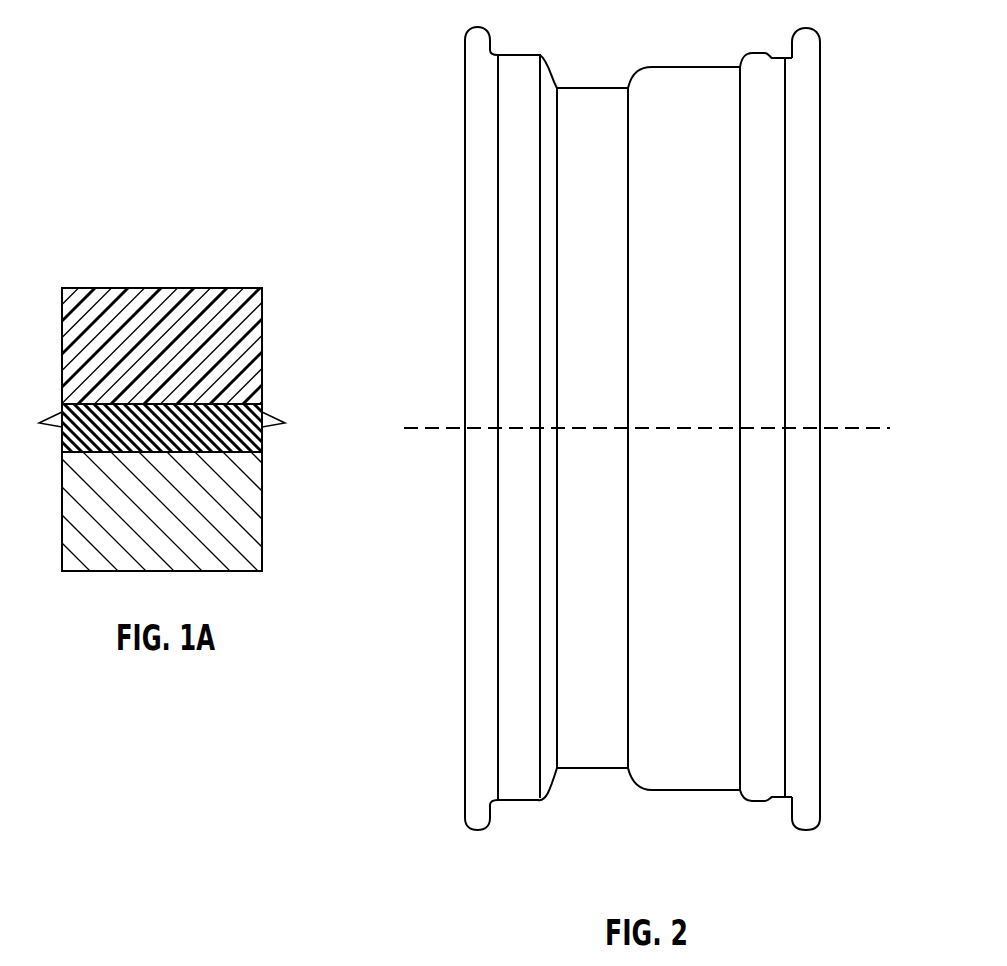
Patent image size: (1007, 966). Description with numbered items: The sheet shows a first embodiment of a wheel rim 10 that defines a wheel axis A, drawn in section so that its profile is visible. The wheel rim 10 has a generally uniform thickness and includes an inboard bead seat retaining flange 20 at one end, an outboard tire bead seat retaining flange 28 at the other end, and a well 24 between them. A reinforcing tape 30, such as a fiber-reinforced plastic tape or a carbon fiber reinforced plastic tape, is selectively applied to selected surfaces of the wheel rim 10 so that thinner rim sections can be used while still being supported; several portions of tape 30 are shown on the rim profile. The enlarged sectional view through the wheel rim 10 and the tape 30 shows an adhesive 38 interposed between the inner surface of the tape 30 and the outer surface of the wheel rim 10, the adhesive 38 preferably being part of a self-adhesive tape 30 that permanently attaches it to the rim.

In FIG. 1A, the wheel rim 10 is at (235, 507).
In FIG. 2, the wheel rim 10 is at (648, 436).
In FIG. 2, the inboard bead seat retaining flange 20 is at (820, 55).
In FIG. 2, the well 24 is at (706, 86).
In FIG. 2, the outboard tire bead seat retaining flange 28 is at (465, 50).
In FIG. 1A, the reinforcing tape 30 is at (170, 320).
In FIG. 2, the reinforcing tape 30 is at (522, 800).
In FIG. 1A, the adhesive 38 is at (262, 415).
In FIG. 2, the wheel axis A is at (423, 427).